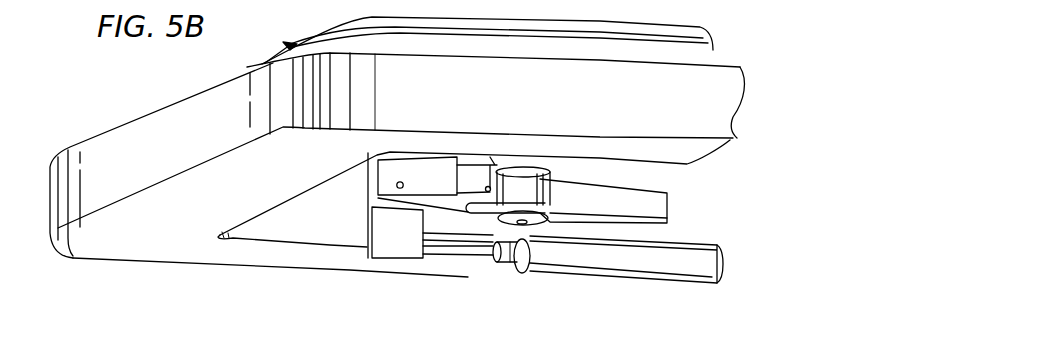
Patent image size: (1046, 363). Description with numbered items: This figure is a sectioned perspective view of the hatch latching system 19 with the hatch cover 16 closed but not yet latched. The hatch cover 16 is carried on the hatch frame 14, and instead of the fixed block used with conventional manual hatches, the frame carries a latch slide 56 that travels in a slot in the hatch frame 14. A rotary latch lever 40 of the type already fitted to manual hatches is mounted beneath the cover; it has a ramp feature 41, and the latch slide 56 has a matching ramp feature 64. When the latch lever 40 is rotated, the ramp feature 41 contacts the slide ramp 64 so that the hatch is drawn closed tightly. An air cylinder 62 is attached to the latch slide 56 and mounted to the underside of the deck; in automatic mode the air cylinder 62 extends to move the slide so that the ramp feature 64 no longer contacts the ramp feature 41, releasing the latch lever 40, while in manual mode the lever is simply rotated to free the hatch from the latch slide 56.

The hatch frame 14 is at (340, 224).
The hatch cover 16 is at (700, 57).
The latching system 19 is at (258, 289).
The rotary latch lever 40 is at (650, 203).
The ramp feature 41 is at (476, 200).
The latch slide 56 is at (385, 252).
The air cylinder 62 is at (687, 268).
The ramp feature 64 is at (473, 181).